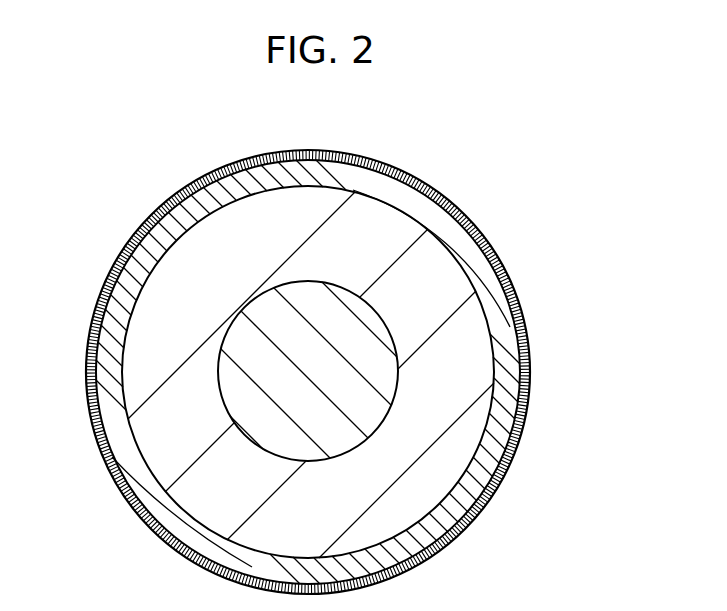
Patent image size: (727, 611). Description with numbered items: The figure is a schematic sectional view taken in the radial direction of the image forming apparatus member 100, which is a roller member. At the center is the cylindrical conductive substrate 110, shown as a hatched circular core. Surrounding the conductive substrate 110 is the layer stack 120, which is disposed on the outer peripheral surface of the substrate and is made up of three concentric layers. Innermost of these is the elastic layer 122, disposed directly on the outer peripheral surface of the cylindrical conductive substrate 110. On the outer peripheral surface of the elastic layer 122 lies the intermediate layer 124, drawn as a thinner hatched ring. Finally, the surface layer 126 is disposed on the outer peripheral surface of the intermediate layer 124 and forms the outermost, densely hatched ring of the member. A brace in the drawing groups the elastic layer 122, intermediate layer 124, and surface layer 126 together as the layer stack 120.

The image forming apparatus member 100 is at (66, 164).
The conductive substrate 110 is at (287, 390).
The layer stack 120 is at (376, 372).
The elastic layer 122 is at (428, 365).
The intermediate layer 124 is at (500, 392).
The surface layer 126 is at (616, 287).